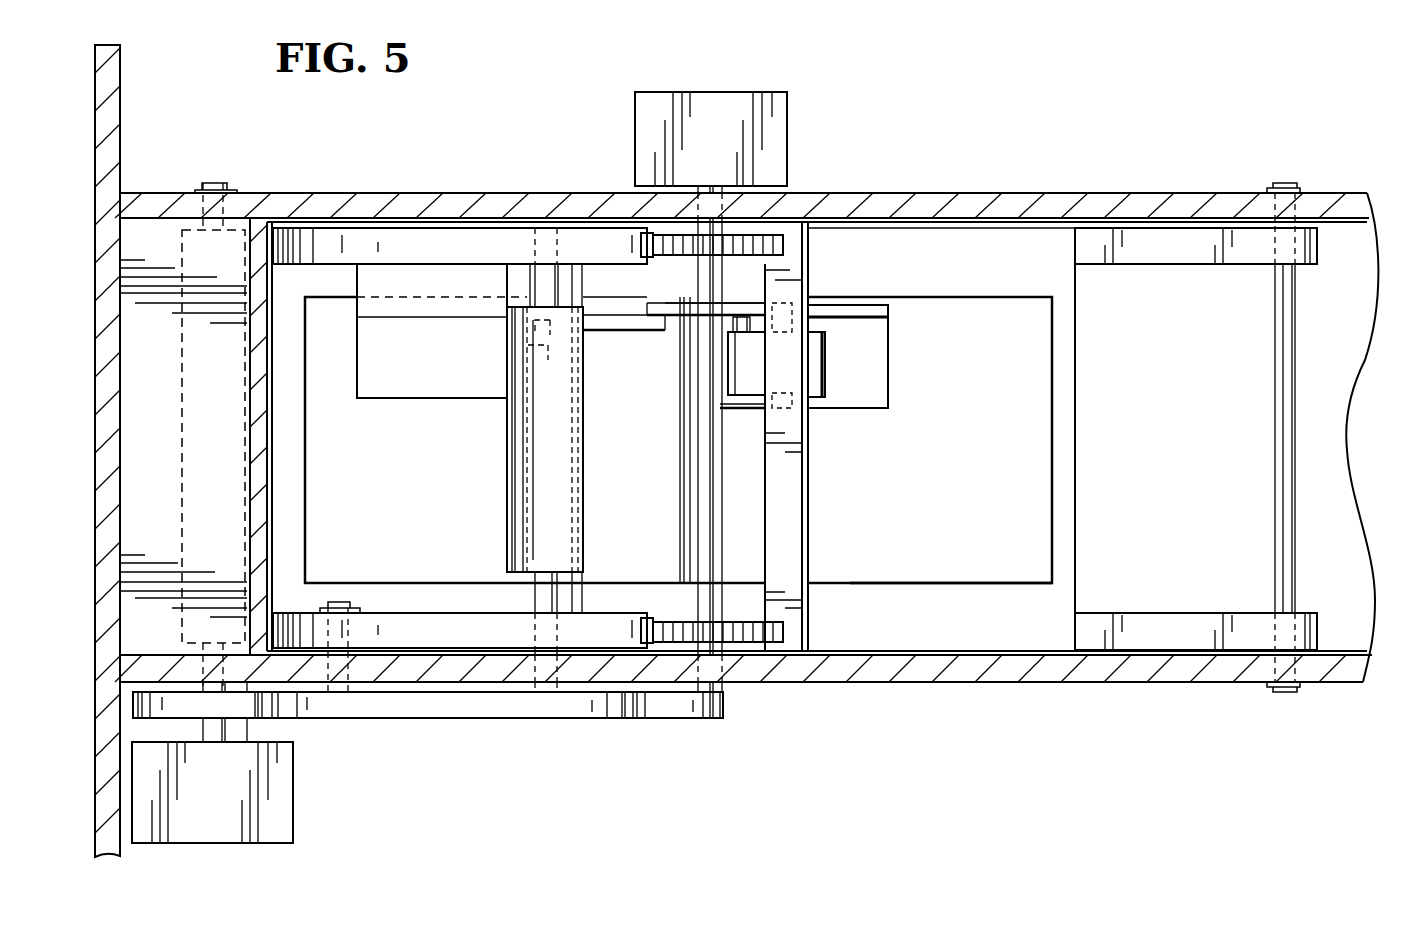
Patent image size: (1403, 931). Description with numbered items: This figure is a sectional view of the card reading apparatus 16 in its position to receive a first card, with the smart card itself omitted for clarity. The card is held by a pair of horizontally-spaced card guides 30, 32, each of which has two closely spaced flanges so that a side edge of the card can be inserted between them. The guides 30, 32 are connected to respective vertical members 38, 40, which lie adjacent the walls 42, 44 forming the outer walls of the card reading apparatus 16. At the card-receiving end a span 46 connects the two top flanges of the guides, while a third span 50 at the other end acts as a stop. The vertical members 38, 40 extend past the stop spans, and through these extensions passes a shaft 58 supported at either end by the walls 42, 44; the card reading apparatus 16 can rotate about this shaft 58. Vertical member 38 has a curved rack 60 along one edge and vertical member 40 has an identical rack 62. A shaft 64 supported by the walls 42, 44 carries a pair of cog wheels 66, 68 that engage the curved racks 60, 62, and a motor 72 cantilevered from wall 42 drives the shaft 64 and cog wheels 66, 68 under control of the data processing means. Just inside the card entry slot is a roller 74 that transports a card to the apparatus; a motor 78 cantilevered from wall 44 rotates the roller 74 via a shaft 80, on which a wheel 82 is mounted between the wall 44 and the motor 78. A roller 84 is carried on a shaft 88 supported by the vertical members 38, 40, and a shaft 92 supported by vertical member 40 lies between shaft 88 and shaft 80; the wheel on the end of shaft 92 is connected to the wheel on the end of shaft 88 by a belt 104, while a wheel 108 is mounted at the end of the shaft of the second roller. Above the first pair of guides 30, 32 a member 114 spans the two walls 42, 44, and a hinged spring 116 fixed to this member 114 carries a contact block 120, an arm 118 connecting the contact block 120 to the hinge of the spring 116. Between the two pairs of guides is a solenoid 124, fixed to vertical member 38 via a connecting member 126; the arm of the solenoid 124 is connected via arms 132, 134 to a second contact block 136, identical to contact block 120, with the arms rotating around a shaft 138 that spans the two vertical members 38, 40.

The card reading apparatus 16 is at (1187, 134).
The card guide 30 is at (991, 297).
The card guide 32 is at (956, 581).
The vertical member 38 is at (415, 246).
The vertical member 40 is at (458, 630).
The wall 42 is at (987, 193).
The wall 44 is at (998, 684).
The span 46 is at (290, 486).
The span 50 is at (1077, 446).
The shaft 58 is at (1285, 412).
The curved rack 60 is at (652, 262).
The curved rack 62 is at (652, 622).
The shaft 64 is at (713, 497).
The cog wheel 66 is at (783, 249).
The cog wheel 68 is at (783, 631).
The motor 72 is at (777, 137).
The roller 74 is at (197, 412).
The motor 78 is at (220, 827).
The shaft 80 is at (150, 732).
The wheel 82 is at (150, 704).
The roller 84 is at (520, 483).
The shaft 88 is at (540, 595).
The shaft 92 is at (355, 627).
The belt 104 is at (434, 708).
The wheel 108 is at (723, 703).
The member 114 is at (787, 512).
The hinged spring 116 is at (824, 364).
The arm 118 is at (890, 308).
The contact block 120 is at (890, 383).
The solenoid 124 is at (437, 383).
The connecting member 126 is at (440, 308).
The arm 132 is at (603, 323).
The arm 134 is at (677, 317).
The contact block 136 is at (738, 410).
The shaft 138 is at (682, 487).